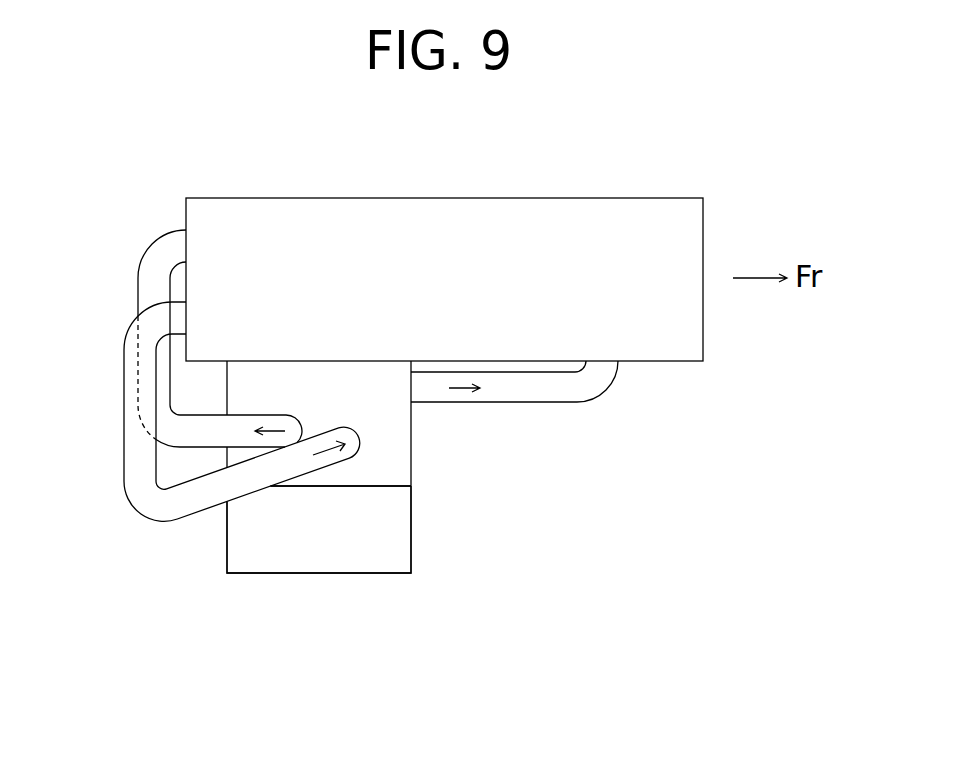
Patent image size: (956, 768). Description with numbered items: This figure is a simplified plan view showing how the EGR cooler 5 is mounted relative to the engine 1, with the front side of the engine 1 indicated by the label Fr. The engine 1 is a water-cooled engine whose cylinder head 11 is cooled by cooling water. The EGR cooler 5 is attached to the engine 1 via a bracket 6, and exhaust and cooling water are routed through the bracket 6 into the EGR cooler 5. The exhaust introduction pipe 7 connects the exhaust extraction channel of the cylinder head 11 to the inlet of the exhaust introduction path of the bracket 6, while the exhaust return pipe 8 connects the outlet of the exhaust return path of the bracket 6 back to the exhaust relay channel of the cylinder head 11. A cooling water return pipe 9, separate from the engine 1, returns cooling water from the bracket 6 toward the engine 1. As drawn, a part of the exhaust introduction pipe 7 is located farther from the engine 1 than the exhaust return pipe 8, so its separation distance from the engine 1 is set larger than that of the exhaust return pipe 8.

The engine 1 is at (712, 195).
The cylinder head 11 is at (535, 222).
The EGR cooler 5 is at (355, 582).
The bracket 6 is at (420, 461).
The exhaust introduction pipe 7 is at (115, 445).
The exhaust return pipe 8 is at (134, 283).
The cooling water return pipe 9 is at (532, 412).